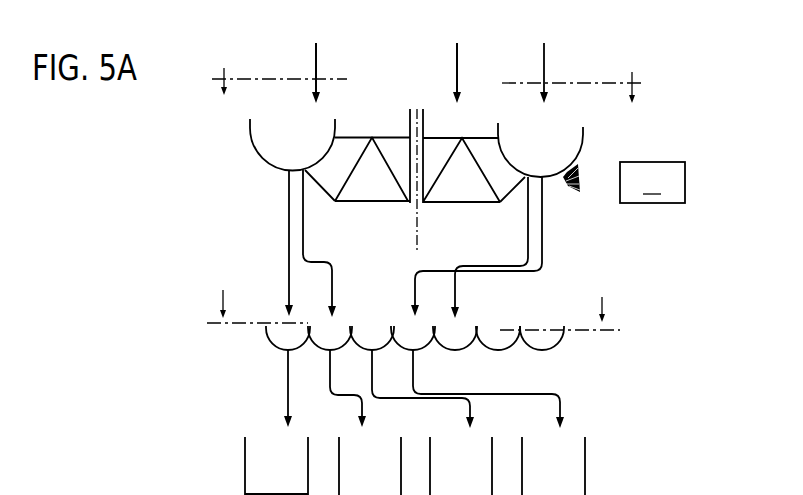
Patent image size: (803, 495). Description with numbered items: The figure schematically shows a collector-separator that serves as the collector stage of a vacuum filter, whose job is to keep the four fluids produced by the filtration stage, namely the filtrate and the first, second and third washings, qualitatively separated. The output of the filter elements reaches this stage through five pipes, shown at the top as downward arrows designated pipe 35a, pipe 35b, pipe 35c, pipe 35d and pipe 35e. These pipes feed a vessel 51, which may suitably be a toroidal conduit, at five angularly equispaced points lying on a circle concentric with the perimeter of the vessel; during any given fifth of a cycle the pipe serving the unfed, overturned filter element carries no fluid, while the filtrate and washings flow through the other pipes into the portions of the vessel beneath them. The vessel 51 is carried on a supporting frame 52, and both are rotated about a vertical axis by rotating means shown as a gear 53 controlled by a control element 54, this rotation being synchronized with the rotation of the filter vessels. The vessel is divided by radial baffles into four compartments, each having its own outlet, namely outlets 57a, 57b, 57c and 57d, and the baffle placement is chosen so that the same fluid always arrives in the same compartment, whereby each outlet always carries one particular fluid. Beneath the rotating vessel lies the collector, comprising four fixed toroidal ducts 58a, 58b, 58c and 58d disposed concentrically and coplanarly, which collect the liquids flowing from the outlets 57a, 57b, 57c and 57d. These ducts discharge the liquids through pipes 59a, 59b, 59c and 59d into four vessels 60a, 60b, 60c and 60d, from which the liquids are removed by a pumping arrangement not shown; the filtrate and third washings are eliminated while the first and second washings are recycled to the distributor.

The pipe 35a is at (560, 72).
The pipe 35b is at (440, 72).
The pipe 35c is at (299, 72).
The pipe 35d is at (333, 67).
The pipe 35e is at (473, 67).
The vessel 51 is at (583, 127).
The frame 52 is at (470, 138).
The gear 53 is at (263, 165).
The control element 54 is at (588, 182).
The outlet 57a is at (542, 228).
The outlet 57b is at (528, 226).
The outlet 57c is at (303, 228).
The outlet 57d is at (289, 243).
The fixed toroidal duct 58a is at (413, 337).
The fixed toroidal duct 58b is at (413, 337).
The fixed toroidal duct 58c is at (414, 337).
The fixed toroidal duct 58d is at (415, 337).
The pipe 59a is at (560, 394).
The pipe 59b is at (458, 399).
The pipe 59c is at (330, 372).
The pipe 59d is at (288, 383).
The vessel 60a is at (553, 466).
The vessel 60b is at (461, 466).
The vessel 60c is at (370, 466).
The vessel 60d is at (276, 466).